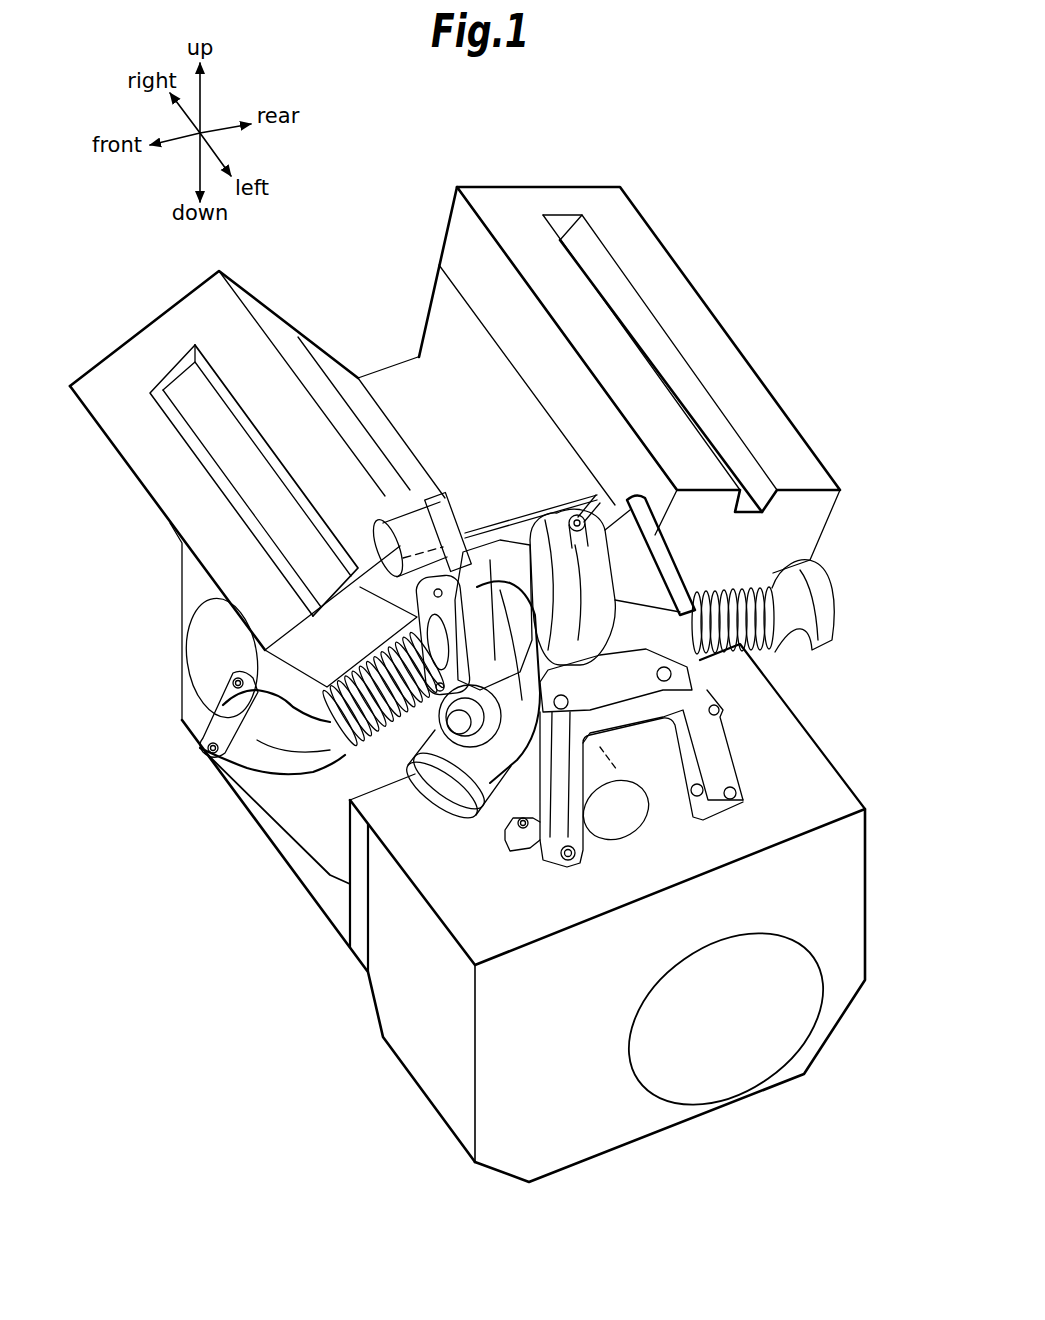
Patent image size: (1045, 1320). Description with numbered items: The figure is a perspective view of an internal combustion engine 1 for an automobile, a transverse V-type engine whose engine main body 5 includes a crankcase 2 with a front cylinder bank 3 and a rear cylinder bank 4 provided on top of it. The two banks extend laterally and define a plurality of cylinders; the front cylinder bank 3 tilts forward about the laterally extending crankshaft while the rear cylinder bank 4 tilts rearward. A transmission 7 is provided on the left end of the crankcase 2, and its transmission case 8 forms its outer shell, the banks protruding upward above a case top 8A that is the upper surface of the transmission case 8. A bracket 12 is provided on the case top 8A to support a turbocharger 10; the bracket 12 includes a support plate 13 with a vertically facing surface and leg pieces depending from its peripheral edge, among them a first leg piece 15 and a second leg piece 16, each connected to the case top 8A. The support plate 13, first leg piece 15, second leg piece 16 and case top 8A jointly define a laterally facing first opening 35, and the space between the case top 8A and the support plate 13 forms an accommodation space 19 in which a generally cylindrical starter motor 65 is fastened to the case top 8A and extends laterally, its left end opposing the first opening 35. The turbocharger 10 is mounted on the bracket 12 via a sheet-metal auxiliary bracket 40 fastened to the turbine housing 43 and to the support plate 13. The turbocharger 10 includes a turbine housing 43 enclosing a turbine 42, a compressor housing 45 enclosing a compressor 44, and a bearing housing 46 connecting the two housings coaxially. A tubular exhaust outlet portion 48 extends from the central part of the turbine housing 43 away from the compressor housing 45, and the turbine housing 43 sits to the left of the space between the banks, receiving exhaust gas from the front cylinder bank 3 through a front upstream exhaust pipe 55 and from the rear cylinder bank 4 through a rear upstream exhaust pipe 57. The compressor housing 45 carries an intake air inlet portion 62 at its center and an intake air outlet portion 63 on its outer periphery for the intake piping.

The internal combustion engine 1 is at (573, 177).
The crankcase 2 is at (300, 812).
The front cylinder bank 3 is at (263, 317).
The rear cylinder bank 4 is at (453, 232).
The engine main body 5 is at (122, 343).
The transmission 7 is at (447, 1128).
The transmission case 8 is at (413, 1042).
The case top 8A is at (822, 778).
The turbocharger 10 is at (624, 490).
The bracket 12 is at (568, 866).
The support plate 13 is at (628, 717).
The first leg piece 15 is at (502, 836).
The second leg piece 16 is at (728, 739).
The accommodation space 19 is at (661, 787).
The first opening 35 is at (660, 784).
The auxiliary bracket 40 is at (756, 660).
The turbine 42 is at (558, 500).
The turbine housing 43 is at (593, 580).
The compressor 44 is at (470, 547).
The compressor housing 45 is at (492, 563).
The bearing housing 46 is at (537, 585).
The exhaust outlet portion 48 is at (668, 590).
The front upstream exhaust pipe 55 is at (250, 762).
The rear upstream exhaust pipe 57 is at (818, 626).
The intake air inlet portion 62 is at (423, 603).
The intake air outlet portion 63 is at (450, 798).
The starter motor 65 is at (612, 830).